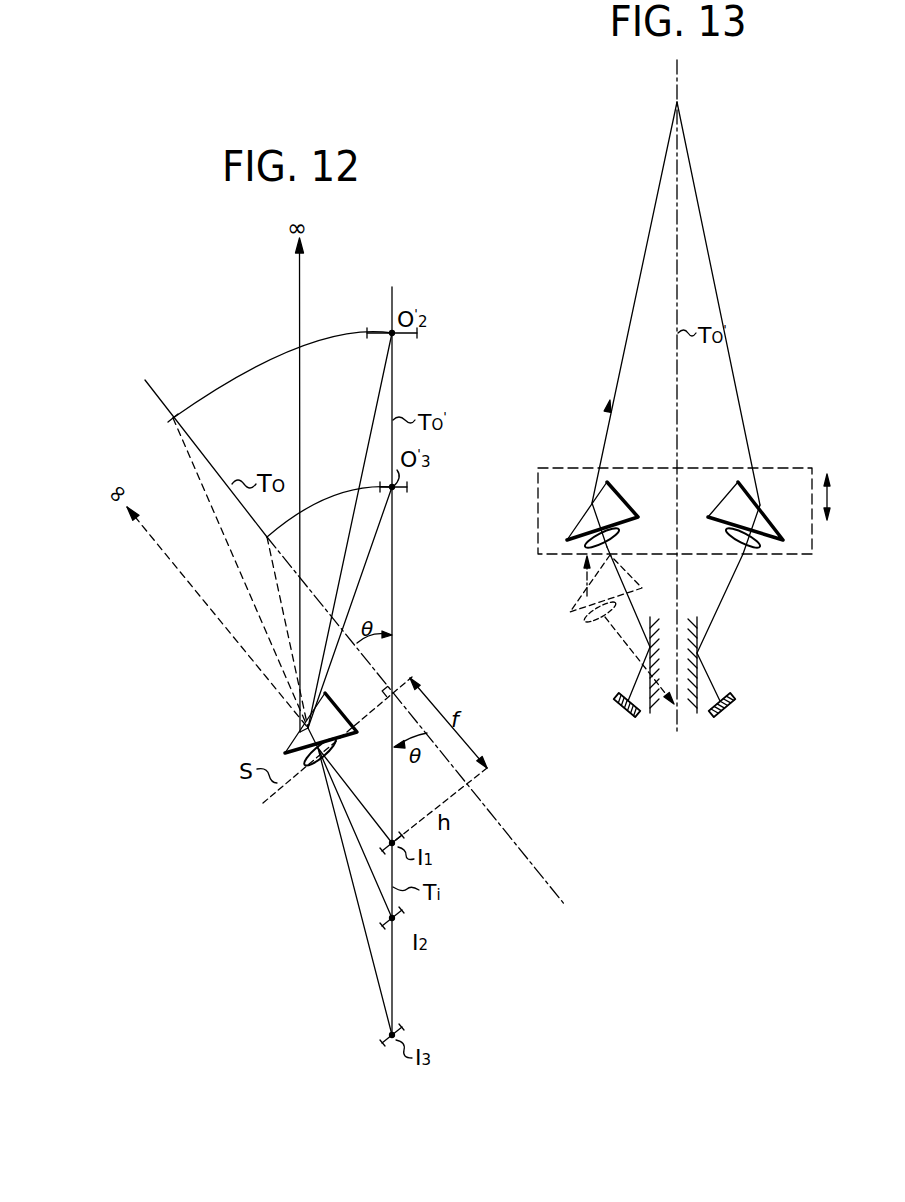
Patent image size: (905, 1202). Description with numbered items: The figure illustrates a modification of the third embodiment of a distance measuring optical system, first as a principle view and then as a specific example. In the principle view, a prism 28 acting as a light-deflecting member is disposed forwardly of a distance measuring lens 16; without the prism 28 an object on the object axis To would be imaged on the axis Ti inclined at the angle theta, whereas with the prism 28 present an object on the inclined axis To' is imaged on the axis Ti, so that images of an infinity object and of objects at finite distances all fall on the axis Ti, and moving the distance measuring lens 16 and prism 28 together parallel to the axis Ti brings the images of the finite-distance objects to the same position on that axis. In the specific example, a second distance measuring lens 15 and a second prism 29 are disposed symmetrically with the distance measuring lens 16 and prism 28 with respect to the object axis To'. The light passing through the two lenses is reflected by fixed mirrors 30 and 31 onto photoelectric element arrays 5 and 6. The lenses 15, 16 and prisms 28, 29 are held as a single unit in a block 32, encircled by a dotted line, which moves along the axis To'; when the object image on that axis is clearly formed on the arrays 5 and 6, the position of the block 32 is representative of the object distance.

In FIG. 12, the prism 28 is at (295, 737).
In FIG. 13, the prism 28 is at (623, 507).
In FIG. 12, the distance measuring lens 16 is at (320, 766).
In FIG. 13, the distance measuring lens 16 is at (621, 536).
In FIG. 13, the prism 29 is at (763, 520).
In FIG. 13, the distance measuring lens 15 is at (744, 548).
In FIG. 13, the block 32 is at (811, 468).
In FIG. 13, the fixed mirror 31 is at (658, 700).
In FIG. 13, the fixed mirror 30 is at (688, 697).
In FIG. 13, the photoelectric element array 6 is at (616, 701).
In FIG. 13, the photoelectric element array 5 is at (732, 703).